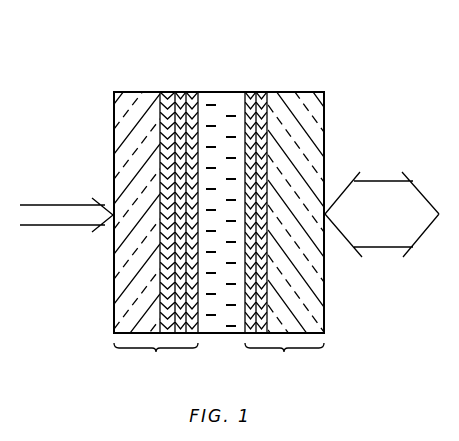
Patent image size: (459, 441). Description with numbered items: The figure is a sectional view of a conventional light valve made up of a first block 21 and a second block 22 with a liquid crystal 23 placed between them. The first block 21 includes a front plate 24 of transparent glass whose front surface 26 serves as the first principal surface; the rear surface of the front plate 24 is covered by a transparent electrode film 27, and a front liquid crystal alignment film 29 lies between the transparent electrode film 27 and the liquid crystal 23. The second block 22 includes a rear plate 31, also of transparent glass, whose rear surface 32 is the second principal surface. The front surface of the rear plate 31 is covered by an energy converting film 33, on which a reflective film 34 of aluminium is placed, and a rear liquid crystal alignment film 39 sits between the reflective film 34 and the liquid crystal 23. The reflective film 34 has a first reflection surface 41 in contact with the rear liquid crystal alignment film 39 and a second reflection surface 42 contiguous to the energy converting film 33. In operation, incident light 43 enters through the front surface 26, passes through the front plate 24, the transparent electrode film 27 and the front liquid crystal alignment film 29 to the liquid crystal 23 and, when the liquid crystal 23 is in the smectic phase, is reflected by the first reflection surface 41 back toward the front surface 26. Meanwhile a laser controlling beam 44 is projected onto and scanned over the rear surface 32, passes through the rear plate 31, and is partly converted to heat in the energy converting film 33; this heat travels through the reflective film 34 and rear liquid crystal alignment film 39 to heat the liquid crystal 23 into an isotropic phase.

The first block 21 is at (284, 360).
The second block 22 is at (156, 360).
The liquid crystal 23 is at (218, 335).
The front plate 24 is at (313, 92).
The front surface 26 is at (325, 119).
The transparent electrode film 27 is at (262, 92).
The front liquid crystal alignment film 29 is at (250, 92).
The rear plate 31 is at (127, 92).
The rear surface 32 is at (114, 115).
The energy converting film 33 is at (162, 92).
The reflective film 34 is at (177, 92).
The rear liquid crystal alignment film 39 is at (190, 92).
The first reflection surface 41 is at (207, 104).
The second reflection surface 42 is at (163, 106).
The incident light 43 is at (383, 248).
The controlling beam 44 is at (60, 222).